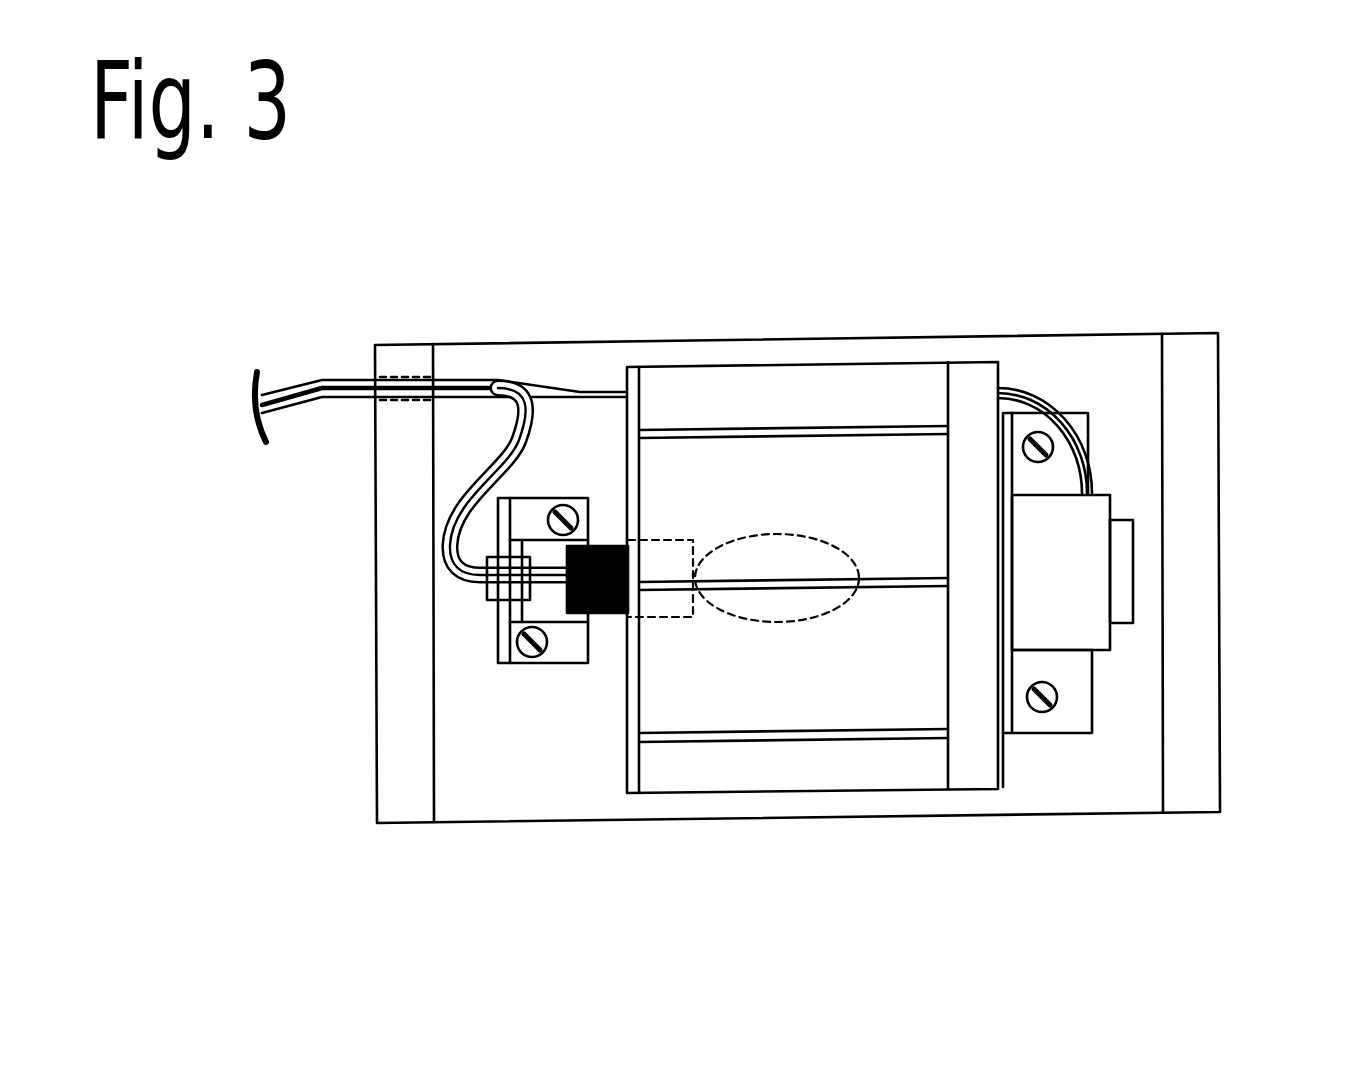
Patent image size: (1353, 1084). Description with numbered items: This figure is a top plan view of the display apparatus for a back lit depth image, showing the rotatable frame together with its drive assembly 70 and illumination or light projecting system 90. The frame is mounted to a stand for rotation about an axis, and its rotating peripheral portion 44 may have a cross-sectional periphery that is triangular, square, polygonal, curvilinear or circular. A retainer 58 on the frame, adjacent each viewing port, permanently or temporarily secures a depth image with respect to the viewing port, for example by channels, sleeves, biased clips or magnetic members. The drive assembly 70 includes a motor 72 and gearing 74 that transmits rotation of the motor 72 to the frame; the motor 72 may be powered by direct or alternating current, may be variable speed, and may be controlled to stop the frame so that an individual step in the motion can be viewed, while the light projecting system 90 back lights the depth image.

The peripheral portion 44 is at (777, 572).
The retainer 58 is at (790, 743).
The drive assembly 70 is at (1122, 627).
The motor 72 is at (1120, 532).
The gearing 74 is at (1088, 620).
The illumination or light projecting system 90 is at (601, 615).